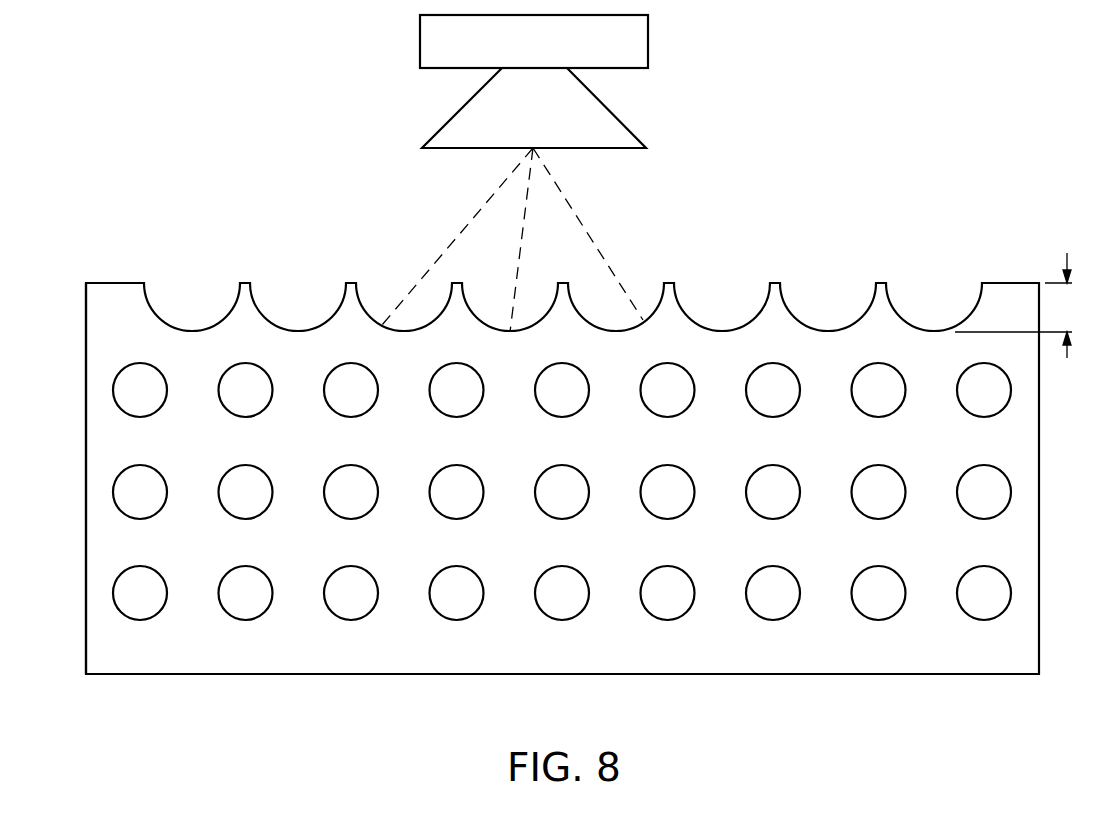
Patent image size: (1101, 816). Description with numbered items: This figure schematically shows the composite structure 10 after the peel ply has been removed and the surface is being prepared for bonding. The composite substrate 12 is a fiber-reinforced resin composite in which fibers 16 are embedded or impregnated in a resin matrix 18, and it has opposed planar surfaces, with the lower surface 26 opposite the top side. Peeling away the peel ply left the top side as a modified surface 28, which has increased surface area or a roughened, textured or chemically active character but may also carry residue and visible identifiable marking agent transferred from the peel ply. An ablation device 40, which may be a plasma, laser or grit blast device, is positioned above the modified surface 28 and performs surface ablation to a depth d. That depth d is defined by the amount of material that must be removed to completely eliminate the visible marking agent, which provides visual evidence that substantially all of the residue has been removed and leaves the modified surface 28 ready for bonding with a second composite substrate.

The composite structure 10 is at (146, 170).
The composite substrate 12 is at (86, 493).
The fibers 16 is at (330, 410).
The resin matrix 18 is at (95, 573).
The surface 26 is at (208, 674).
The modified surface 28 is at (118, 283).
The ablation device 40 is at (648, 42).
The depth d is at (1014, 305).